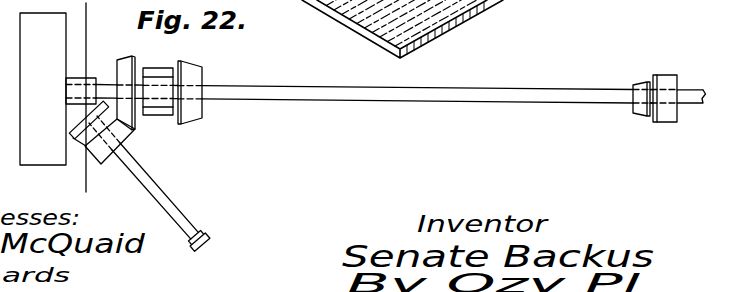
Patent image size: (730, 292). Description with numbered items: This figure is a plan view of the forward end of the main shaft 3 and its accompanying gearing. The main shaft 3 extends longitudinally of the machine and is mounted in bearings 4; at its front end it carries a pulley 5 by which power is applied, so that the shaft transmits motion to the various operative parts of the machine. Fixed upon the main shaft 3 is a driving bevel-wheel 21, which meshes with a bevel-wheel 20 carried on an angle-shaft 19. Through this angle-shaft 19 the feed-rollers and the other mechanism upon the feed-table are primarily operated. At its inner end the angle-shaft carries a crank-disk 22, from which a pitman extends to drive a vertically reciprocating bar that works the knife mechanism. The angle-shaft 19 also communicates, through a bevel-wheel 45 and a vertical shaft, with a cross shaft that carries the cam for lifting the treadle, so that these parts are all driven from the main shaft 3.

The main shaft 3 is at (382, 96).
The bearings 4 is at (160, 98).
The pulley 5 is at (43, 89).
The angle-shaft 19 is at (158, 188).
The bevel-wheel 20 is at (103, 162).
The driving bevel-wheel 21 is at (126, 66).
The crank-disk 22 is at (74, 142).
The bevel-wheel 45 is at (211, 246).